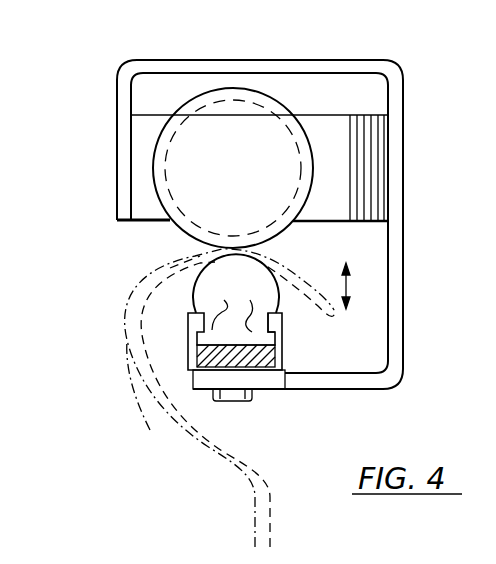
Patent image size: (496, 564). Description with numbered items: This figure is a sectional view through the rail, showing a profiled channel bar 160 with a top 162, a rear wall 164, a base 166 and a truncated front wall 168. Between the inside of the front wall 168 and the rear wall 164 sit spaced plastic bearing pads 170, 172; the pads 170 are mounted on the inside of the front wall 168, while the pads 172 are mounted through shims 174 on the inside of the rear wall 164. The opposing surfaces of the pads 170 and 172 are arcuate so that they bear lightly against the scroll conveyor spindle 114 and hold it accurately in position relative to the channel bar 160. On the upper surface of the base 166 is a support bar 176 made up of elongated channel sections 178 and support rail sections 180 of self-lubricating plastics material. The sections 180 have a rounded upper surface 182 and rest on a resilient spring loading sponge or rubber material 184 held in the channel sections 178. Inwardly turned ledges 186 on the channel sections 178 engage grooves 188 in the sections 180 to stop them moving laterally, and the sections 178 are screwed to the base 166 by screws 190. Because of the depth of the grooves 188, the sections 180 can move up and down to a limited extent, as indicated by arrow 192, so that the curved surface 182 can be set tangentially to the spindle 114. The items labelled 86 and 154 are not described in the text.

The profiled channel bar 160 is at (149, 58).
The top 162 is at (297, 60).
The plastic bearing pads 172 is at (340, 128).
The shims 174 is at (365, 115).
The truncated front wall 168 is at (117, 140).
The scroll conveyor spindle 114 is at (155, 170).
The plastic bearing pads 170 is at (140, 206).
The rounded upper surface 182 is at (197, 258).
The support rail sections 180 is at (200, 290).
The grooves 188 is at (233, 306).
The support bar 176 is at (186, 322).
The bracket arm 86 is at (280, 334).
The inwardly turned ledges 186 is at (197, 350).
The resilient spring loading sponge or rubber material 184 is at (262, 358).
The elongated channel sections 178 is at (188, 360).
The screws 190 is at (245, 402).
The base 166 is at (330, 390).
The rear wall 164 is at (403, 240).
The arrow 192 is at (347, 289).
The tape 154 is at (255, 505).